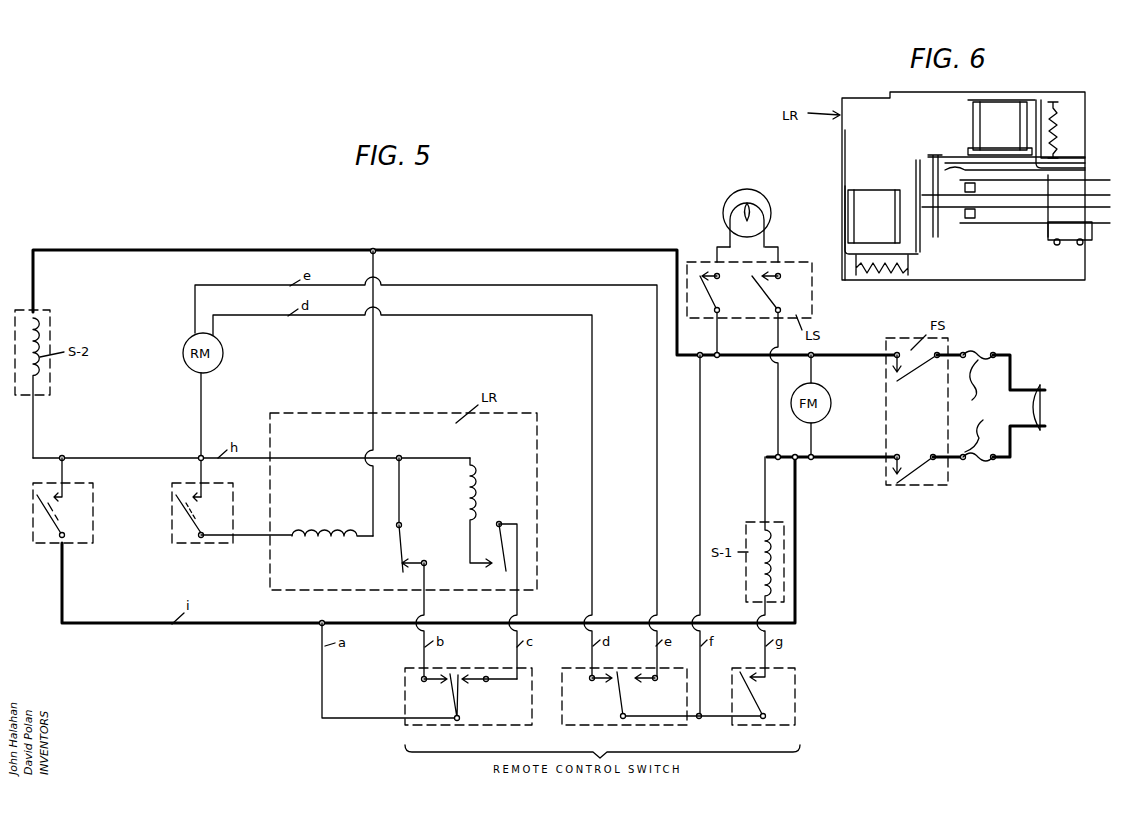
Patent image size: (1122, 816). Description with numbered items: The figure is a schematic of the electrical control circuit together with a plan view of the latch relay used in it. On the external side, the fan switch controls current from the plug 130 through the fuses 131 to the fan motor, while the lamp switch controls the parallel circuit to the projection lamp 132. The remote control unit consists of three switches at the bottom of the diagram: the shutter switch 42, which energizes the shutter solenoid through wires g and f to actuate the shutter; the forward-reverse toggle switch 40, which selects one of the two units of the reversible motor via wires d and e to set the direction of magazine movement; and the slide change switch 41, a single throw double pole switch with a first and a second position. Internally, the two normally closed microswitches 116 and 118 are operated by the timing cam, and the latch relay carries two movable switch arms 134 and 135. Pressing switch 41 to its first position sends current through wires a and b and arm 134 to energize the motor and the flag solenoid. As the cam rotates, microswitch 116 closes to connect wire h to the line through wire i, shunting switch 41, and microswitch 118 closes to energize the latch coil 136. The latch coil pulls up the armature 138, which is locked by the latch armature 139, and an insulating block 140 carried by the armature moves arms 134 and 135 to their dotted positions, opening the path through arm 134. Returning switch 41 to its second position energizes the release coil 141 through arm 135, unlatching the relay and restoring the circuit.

In FIG. 5, the microswitch 116 is at (88, 522).
In FIG. 5, the microswitch 118 is at (222, 522).
In FIG. 5, the plug 130 is at (1036, 412).
In FIG. 5, the fuses 131 is at (977, 406).
In FIG. 5, the projection lamp 132 is at (770, 214).
In FIG. 5, the switch arm 134 is at (396, 549).
In FIG. 6, the switch arm 134 is at (999, 216).
In FIG. 5, the switch arm 135 is at (491, 601).
In FIG. 6, the switch arm 135 is at (1033, 212).
In FIG. 5, the latch coil 136 is at (313, 531).
In FIG. 6, the latch coil 136 is at (975, 119).
In FIG. 6, the armature 138 is at (957, 157).
In FIG. 6, the latch armature 139 is at (914, 173).
In FIG. 6, the insulating block 140 is at (942, 232).
In FIG. 5, the release coil 141 is at (478, 488).
In FIG. 6, the release coil 141 is at (883, 196).
In FIG. 5, the forward-reverse toggle switch 40 is at (576, 672).
In FIG. 5, the slide change switch 41 is at (410, 674).
In FIG. 5, the shutter switch 42 is at (750, 672).